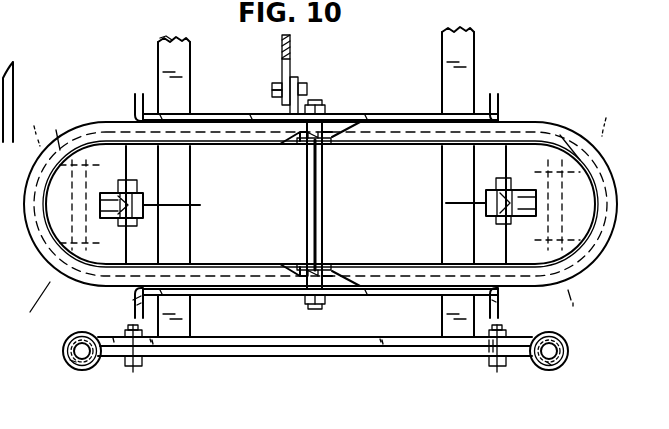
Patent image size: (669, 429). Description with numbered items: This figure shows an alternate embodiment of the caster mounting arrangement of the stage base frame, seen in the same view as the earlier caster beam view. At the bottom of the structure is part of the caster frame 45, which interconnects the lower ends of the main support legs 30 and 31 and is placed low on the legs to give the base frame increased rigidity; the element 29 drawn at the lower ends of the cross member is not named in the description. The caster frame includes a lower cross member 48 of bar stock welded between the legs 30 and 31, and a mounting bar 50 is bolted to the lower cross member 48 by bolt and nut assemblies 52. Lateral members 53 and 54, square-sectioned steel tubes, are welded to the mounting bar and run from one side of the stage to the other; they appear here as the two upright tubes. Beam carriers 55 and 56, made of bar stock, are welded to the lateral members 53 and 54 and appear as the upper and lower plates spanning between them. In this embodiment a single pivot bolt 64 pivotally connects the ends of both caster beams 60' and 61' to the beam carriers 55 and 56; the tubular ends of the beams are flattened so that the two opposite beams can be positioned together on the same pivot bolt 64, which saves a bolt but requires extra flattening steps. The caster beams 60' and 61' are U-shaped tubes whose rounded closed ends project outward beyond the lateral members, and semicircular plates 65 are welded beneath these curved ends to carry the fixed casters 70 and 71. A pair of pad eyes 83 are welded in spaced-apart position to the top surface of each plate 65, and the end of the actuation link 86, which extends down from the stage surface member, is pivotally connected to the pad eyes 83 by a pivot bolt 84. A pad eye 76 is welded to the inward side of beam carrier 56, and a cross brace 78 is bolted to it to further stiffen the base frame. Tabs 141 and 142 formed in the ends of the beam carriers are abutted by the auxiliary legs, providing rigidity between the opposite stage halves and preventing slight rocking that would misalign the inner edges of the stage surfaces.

The bearing 29 is at (590, 378).
The main support leg 30 is at (76, 370).
The main support leg 31 is at (551, 370).
The caster frame 45 is at (150, 53).
The lower cross member 48 is at (258, 358).
The mounting bar 50 is at (240, 337).
The bolt and nut assembly 52 is at (494, 370).
The lateral member 53 is at (156, 37).
The lateral member 54 is at (476, 31).
The beam carrier 55 is at (405, 291).
The beam carrier 56 is at (383, 115).
The caster beam 60' is at (313, 219).
The caster beam 61' is at (577, 303).
The pivot bolt 64 is at (323, 212).
The semicircular plate 65 is at (559, 142).
The fixed caster 70 is at (31, 129).
The fixed caster 71 is at (609, 119).
The pad eye 76 is at (299, 78).
The cross brace 78 is at (292, 51).
The pad eye 83 is at (538, 204).
The pivot bolt 84 is at (512, 178).
The actuation link 86 is at (470, 203).
The tab 141 is at (132, 305).
The tab 142 is at (497, 300).